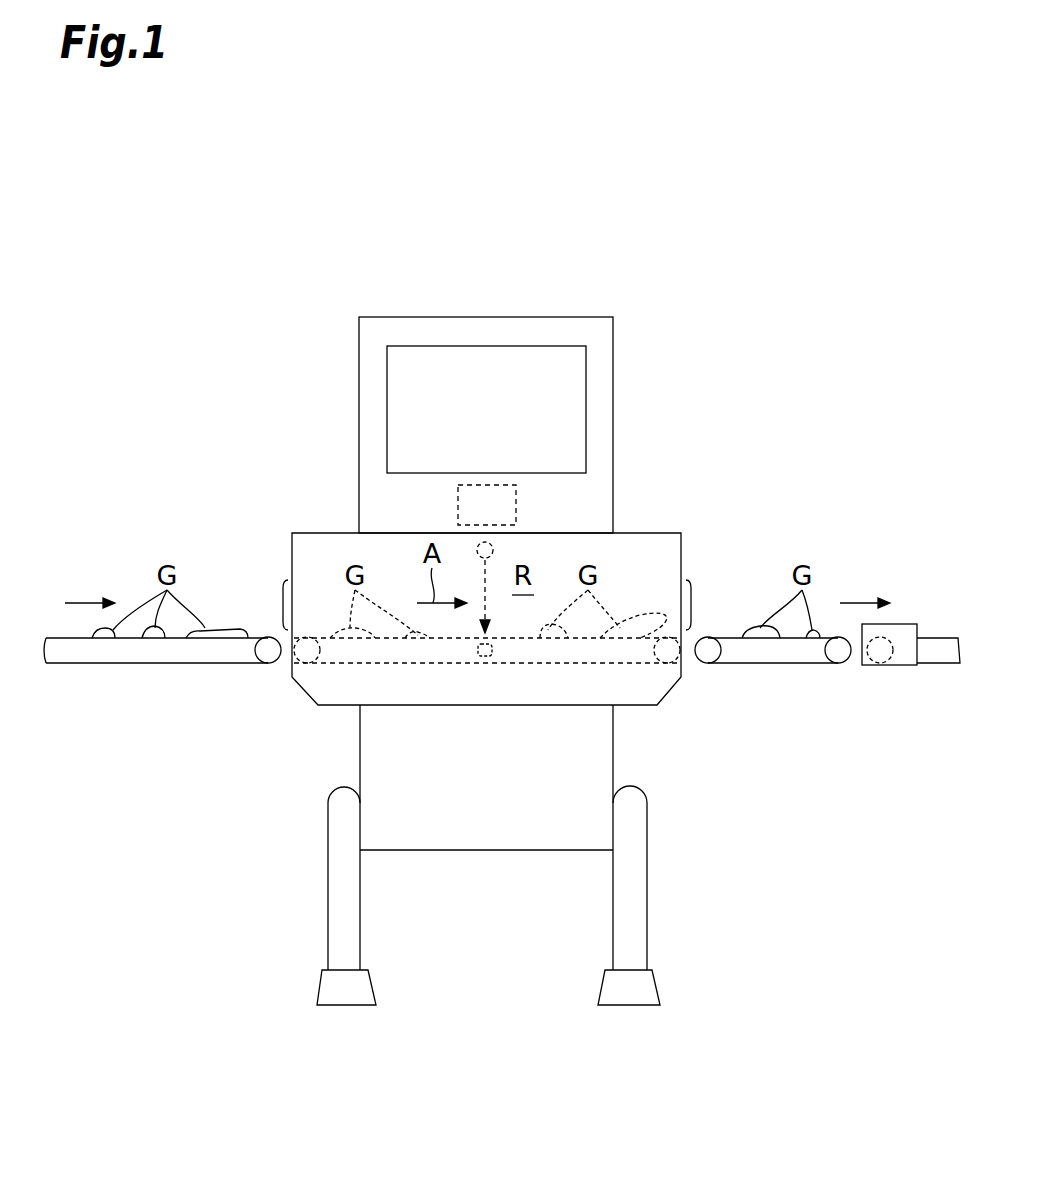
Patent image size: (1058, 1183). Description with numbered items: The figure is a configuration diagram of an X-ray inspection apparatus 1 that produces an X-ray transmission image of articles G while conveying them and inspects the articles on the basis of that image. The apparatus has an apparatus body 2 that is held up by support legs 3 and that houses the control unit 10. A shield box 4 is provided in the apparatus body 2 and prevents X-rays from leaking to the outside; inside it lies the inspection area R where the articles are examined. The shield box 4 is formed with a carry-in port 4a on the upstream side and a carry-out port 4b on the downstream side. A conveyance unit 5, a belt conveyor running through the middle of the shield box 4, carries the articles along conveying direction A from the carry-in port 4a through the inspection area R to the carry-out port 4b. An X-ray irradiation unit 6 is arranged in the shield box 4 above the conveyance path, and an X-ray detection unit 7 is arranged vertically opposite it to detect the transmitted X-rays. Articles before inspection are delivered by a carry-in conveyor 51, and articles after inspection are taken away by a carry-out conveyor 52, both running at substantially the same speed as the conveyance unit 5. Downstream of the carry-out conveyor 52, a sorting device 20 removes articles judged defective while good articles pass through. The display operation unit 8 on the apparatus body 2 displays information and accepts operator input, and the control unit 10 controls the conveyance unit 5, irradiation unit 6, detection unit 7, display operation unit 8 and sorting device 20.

The X-ray inspection apparatus 1 is at (697, 286).
The apparatus body 2 is at (359, 372).
The support legs 3 is at (328, 893).
The shield box 4 is at (681, 538).
The carry-in port 4a is at (282, 605).
The carry-out port 4b is at (692, 605).
The conveyance unit 5 is at (352, 665).
The X-ray irradiation unit 6 is at (493, 551).
The X-ray detection unit 7 is at (497, 653).
The display operation unit 8 is at (586, 430).
The control unit 10 is at (458, 508).
The sorting device 20 is at (900, 624).
The carry-in conveyor 51 is at (132, 665).
The carry-out conveyor 52 is at (743, 665).